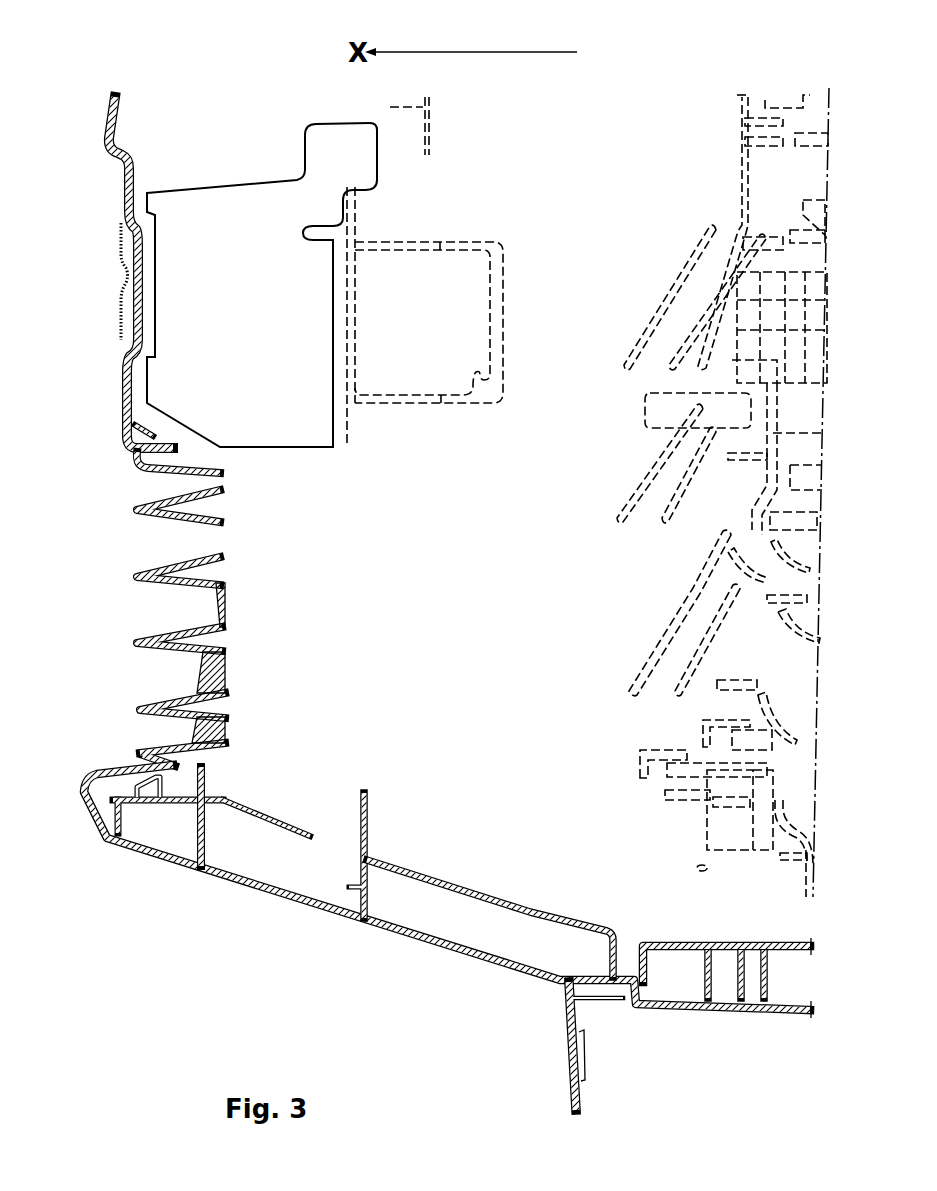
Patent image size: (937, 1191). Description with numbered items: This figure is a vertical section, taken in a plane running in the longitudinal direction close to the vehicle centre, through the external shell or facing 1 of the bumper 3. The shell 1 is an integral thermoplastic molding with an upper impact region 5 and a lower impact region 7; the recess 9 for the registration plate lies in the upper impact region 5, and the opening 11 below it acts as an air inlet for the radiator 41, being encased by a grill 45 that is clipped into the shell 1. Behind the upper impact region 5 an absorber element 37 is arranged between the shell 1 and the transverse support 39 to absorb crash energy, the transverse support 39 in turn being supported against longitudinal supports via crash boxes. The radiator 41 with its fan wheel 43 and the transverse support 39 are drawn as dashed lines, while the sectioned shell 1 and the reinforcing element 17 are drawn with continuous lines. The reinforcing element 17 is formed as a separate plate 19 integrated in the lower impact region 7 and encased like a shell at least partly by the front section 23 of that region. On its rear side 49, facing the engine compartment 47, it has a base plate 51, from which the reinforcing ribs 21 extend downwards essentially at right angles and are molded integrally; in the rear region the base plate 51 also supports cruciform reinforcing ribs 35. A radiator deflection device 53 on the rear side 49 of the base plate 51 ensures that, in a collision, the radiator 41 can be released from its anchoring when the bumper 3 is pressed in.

The external shell or facing 1 is at (110, 106).
The bumper 3 is at (90, 912).
The upper impact region 5 is at (108, 281).
The lower impact region 7 is at (87, 775).
The recess 9 is at (108, 205).
The opening 11 is at (122, 584).
The reinforcing element 17 is at (578, 955).
The plate 19 is at (336, 878).
The reinforcing ribs 21 is at (205, 818).
The front section 23 is at (147, 848).
The reinforcing ribs 35 is at (810, 942).
The absorber element 37 is at (258, 207).
The transverse support 39 is at (425, 242).
The radiator 41 is at (830, 310).
The fan wheel 43 is at (695, 255).
The grill 45 is at (205, 583).
The engine compartment 47 is at (631, 817).
The rear side 49 is at (433, 860).
The base plate 51 is at (513, 905).
The radiator deflection device 53 is at (363, 822).